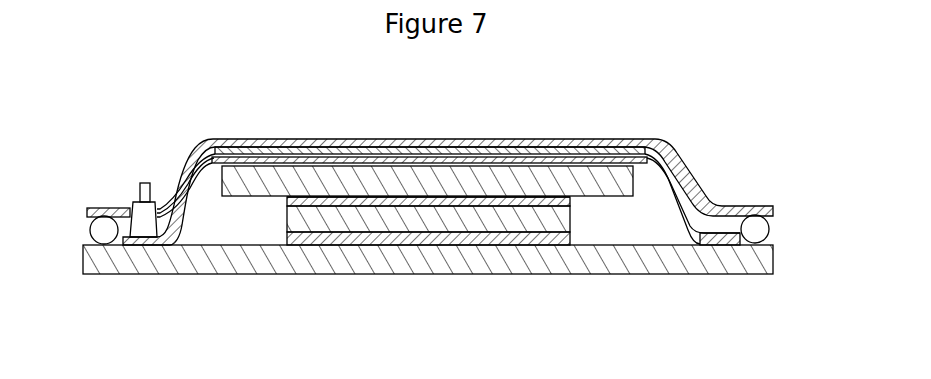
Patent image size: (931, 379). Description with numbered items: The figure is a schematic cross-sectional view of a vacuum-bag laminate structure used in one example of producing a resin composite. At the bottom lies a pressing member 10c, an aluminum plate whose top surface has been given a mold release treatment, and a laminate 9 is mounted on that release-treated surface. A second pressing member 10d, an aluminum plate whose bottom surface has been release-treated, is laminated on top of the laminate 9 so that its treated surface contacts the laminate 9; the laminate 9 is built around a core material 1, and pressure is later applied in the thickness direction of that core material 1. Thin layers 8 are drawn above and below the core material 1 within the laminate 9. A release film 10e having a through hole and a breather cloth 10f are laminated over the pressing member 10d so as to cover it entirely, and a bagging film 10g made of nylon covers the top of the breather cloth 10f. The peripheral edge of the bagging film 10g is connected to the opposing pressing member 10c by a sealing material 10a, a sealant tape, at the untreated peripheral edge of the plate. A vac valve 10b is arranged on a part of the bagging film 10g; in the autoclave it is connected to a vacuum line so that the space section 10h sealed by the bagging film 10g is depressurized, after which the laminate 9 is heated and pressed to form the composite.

The core material 1 is at (372, 220).
The thin layer 8 is at (348, 201).
The laminate 9 is at (572, 200).
The sealing material 10a is at (100, 229).
The vac valve 10b is at (140, 190).
The pressing member 10c is at (490, 262).
The pressing member 10d is at (507, 180).
The release film 10e is at (351, 158).
The breather cloth 10f is at (400, 150).
The bagging film 10g is at (456, 143).
The space section 10h is at (647, 182).